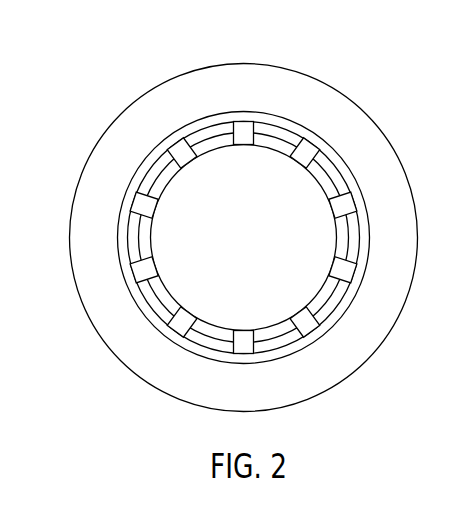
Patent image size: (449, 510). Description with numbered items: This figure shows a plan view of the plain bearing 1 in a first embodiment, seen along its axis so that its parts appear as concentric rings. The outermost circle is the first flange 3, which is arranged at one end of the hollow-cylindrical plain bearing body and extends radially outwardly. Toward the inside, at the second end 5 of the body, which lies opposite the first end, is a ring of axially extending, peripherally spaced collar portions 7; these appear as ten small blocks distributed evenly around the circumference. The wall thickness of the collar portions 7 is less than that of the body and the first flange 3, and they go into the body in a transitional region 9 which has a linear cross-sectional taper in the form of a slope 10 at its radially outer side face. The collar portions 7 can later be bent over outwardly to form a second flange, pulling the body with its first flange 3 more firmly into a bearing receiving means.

The plain bearing 1 is at (380, 95).
The first flange 3 is at (75, 202).
The second end 5 is at (297, 160).
The collar portions 7 is at (325, 280).
The transitional region 9 is at (222, 123).
The slope 10 is at (244, 238).